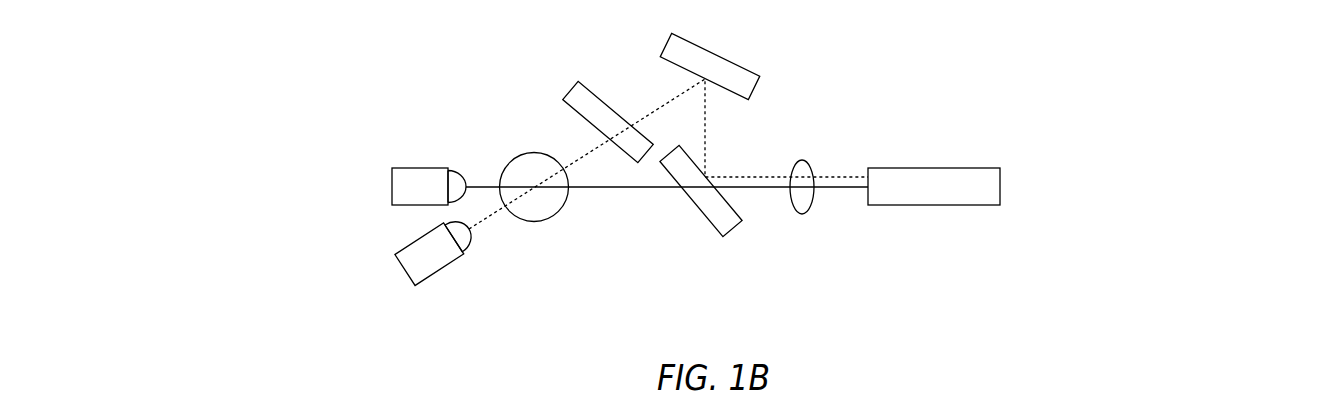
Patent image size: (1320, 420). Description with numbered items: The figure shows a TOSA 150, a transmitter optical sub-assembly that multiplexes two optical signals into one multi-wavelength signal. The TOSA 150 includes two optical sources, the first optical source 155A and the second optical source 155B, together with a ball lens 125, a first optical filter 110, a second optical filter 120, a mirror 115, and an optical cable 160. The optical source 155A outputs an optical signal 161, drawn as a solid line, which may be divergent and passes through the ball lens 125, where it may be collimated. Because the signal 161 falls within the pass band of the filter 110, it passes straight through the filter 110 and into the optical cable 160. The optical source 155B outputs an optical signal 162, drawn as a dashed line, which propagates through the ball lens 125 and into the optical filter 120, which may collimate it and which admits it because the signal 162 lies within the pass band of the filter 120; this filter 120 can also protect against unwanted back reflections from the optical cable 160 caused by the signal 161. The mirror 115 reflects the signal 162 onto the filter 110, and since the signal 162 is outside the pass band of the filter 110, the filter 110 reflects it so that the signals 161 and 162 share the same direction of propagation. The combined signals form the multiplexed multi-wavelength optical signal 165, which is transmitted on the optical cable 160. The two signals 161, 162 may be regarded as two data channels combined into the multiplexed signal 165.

The TOSA 150 is at (288, 78).
The optical source 155A is at (422, 168).
The optical source 155B is at (442, 269).
The optical signal 161 is at (657, 189).
The optical signal 162 is at (487, 222).
The ball lens 125 is at (553, 216).
The optical filter 120 is at (571, 88).
The mirror 115 is at (713, 53).
The optical filter 110 is at (733, 225).
The multi-wavelength optical signal 165 is at (800, 160).
The optical cable 160 is at (1000, 178).